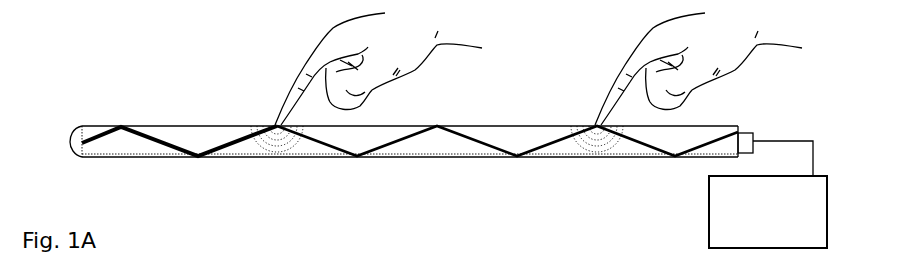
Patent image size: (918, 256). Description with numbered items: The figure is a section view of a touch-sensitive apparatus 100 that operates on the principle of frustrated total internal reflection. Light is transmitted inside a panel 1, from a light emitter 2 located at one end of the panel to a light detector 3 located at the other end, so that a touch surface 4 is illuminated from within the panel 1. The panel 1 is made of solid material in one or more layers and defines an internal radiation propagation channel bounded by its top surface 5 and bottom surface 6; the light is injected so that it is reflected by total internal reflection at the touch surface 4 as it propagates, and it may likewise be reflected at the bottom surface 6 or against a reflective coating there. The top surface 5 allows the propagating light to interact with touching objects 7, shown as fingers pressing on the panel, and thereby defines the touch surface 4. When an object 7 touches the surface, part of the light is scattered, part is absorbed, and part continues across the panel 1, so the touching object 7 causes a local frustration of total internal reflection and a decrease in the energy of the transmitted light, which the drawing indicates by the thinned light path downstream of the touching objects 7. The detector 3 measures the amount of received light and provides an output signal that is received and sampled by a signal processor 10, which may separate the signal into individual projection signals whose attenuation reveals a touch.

The touch-sensitive apparatus 100 is at (133, 96).
The panel 1 is at (192, 136).
The light emitter 2 is at (82, 127).
The light detector 3 is at (748, 136).
The touch surface 4 is at (487, 126).
The top surface 5 is at (249, 126).
The bottom surface 6 is at (240, 157).
The touching object 7 is at (312, 57).
The signal processor 10 is at (709, 220).